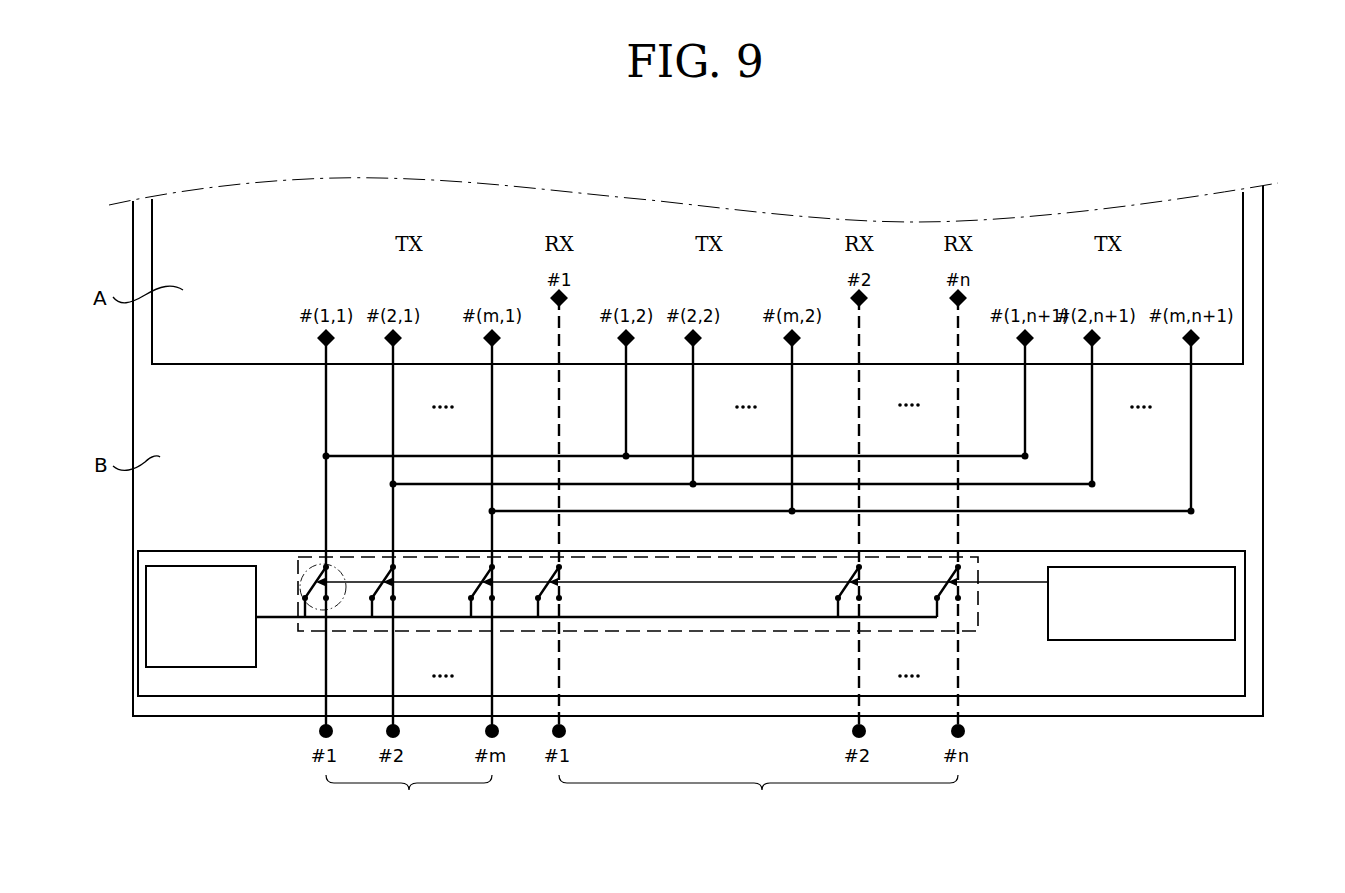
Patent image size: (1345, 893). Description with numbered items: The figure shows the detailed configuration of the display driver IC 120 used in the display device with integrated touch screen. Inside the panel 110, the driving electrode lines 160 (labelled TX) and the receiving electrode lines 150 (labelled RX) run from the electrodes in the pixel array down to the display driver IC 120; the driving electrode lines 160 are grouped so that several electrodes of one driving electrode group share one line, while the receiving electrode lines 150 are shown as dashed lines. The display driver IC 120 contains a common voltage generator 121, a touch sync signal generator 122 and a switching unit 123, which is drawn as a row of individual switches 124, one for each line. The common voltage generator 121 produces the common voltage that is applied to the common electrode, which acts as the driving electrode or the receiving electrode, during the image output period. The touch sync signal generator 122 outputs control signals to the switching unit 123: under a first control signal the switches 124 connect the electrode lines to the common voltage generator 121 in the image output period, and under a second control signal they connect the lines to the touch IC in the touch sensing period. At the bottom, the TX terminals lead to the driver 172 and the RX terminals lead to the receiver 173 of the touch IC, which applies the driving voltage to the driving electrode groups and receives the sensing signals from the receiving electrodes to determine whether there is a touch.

The panel 110 is at (1264, 458).
The display driver IC 120 is at (1245, 628).
The common voltage generator 121 is at (256, 645).
The touch sync signal generator 122 is at (1190, 640).
The switching unit 123 is at (978, 620).
The switch 124 is at (299, 563).
The receiving electrode line 150 is at (560, 416).
The driving electrode line 160 is at (326, 402).
The TX terminals 172 is at (409, 811).
The receiver 173 is at (758, 811).